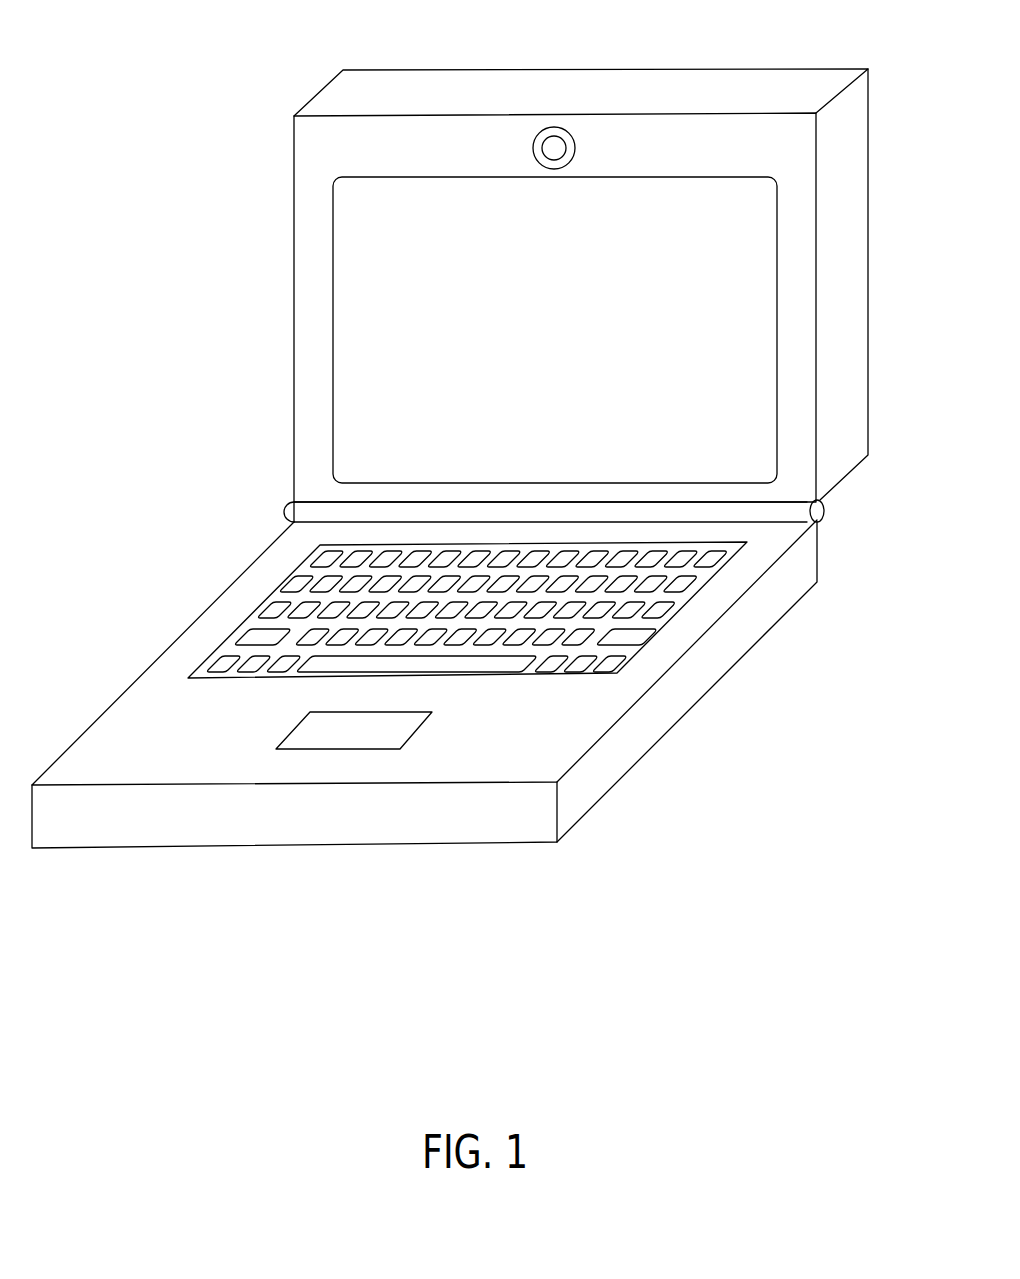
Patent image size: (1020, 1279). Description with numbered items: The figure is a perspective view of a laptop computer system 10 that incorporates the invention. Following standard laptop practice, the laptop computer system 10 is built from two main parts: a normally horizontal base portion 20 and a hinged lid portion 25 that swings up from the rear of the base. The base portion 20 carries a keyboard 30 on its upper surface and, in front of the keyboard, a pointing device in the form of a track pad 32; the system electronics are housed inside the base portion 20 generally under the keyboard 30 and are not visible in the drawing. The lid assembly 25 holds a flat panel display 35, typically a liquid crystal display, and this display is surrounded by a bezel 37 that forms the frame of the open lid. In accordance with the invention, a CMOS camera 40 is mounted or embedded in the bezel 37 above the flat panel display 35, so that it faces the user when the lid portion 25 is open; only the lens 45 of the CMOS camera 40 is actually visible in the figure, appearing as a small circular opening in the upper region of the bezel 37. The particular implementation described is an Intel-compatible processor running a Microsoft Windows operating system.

The laptop computer system 10 is at (208, 1002).
The base portion 20 is at (820, 555).
The lid portion 25 is at (869, 253).
The keyboard 30 is at (298, 582).
The track pad 32 is at (387, 731).
The flat panel display 35 is at (378, 282).
The bezel 37 is at (317, 159).
The CMOS camera 40 is at (563, 122).
The lens 45 is at (551, 148).